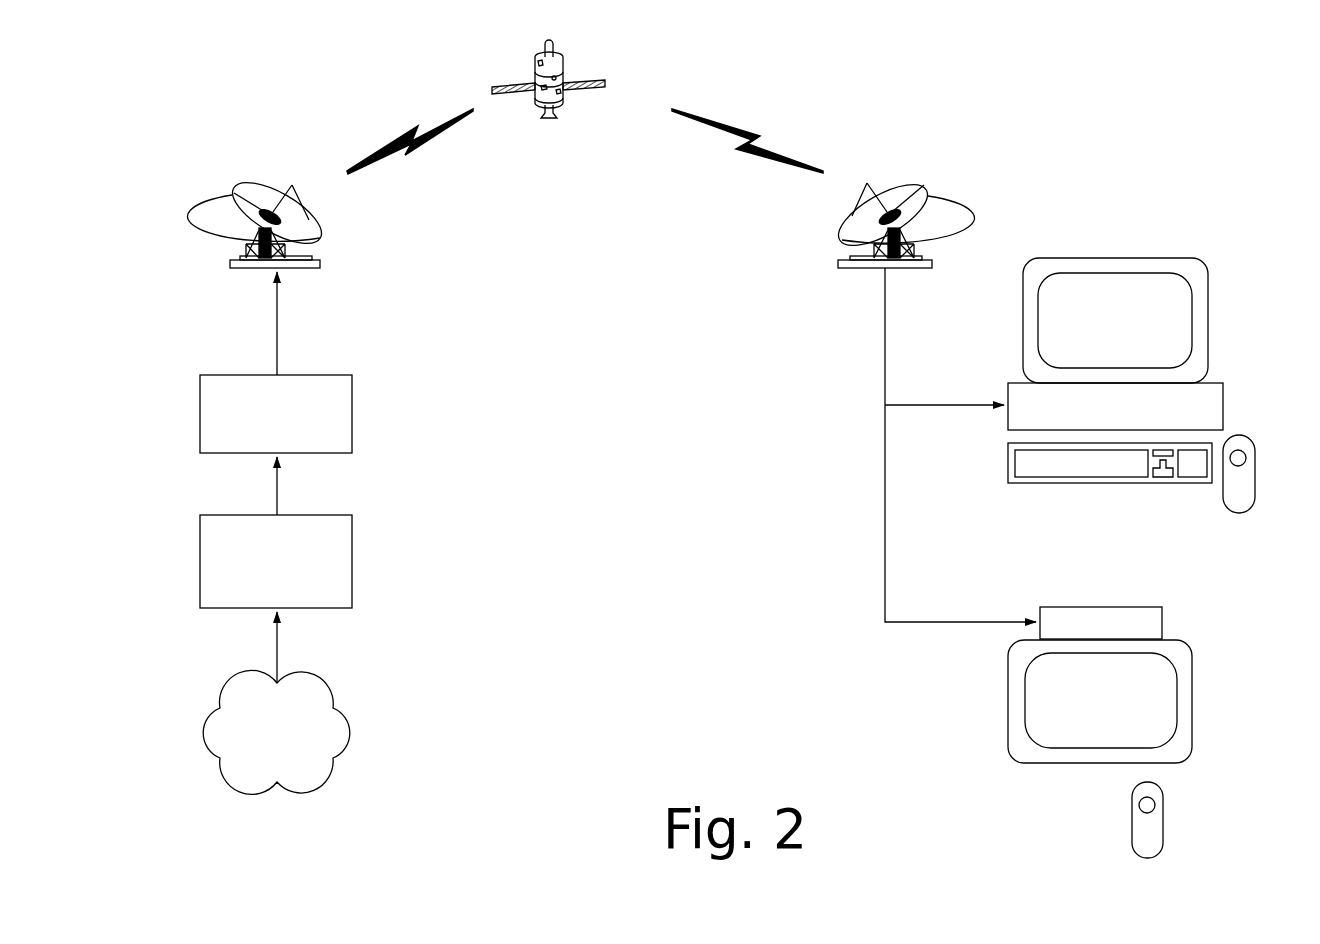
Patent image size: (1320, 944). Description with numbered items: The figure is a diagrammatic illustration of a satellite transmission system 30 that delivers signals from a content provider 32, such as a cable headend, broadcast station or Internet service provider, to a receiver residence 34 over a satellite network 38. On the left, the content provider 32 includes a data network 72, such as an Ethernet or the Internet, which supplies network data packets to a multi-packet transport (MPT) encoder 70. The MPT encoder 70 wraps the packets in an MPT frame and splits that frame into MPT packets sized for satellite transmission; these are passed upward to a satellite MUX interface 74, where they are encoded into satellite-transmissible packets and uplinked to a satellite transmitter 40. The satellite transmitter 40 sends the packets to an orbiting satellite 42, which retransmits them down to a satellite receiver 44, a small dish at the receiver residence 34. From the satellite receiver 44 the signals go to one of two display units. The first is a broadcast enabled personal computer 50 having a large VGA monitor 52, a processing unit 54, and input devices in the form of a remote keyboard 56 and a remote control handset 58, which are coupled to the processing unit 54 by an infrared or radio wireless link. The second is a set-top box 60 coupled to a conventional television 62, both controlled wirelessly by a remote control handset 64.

The satellite transmission system 30 is at (615, 732).
The content provider 32 is at (418, 619).
The receiver residence 34 is at (897, 691).
The satellite network 38 is at (596, 225).
The satellite transmitter 40 is at (306, 218).
The orbiting satellite 42 is at (552, 80).
The satellite receiver 44 is at (912, 192).
The broadcast enabled personal computer 50 is at (1212, 317).
The VGA monitor 52 is at (1100, 295).
The processing unit 54 is at (1208, 398).
The remote keyboard 56 is at (1115, 465).
The remote control handset 58 is at (1237, 482).
The set-top box 60 is at (1130, 615).
The television 62 is at (1193, 705).
The remote control handset 64 is at (1148, 828).
The multi-packet transport (MPT) encoder 70 is at (337, 545).
The data network 72 is at (352, 727).
The satellite MUX interface 74 is at (337, 398).